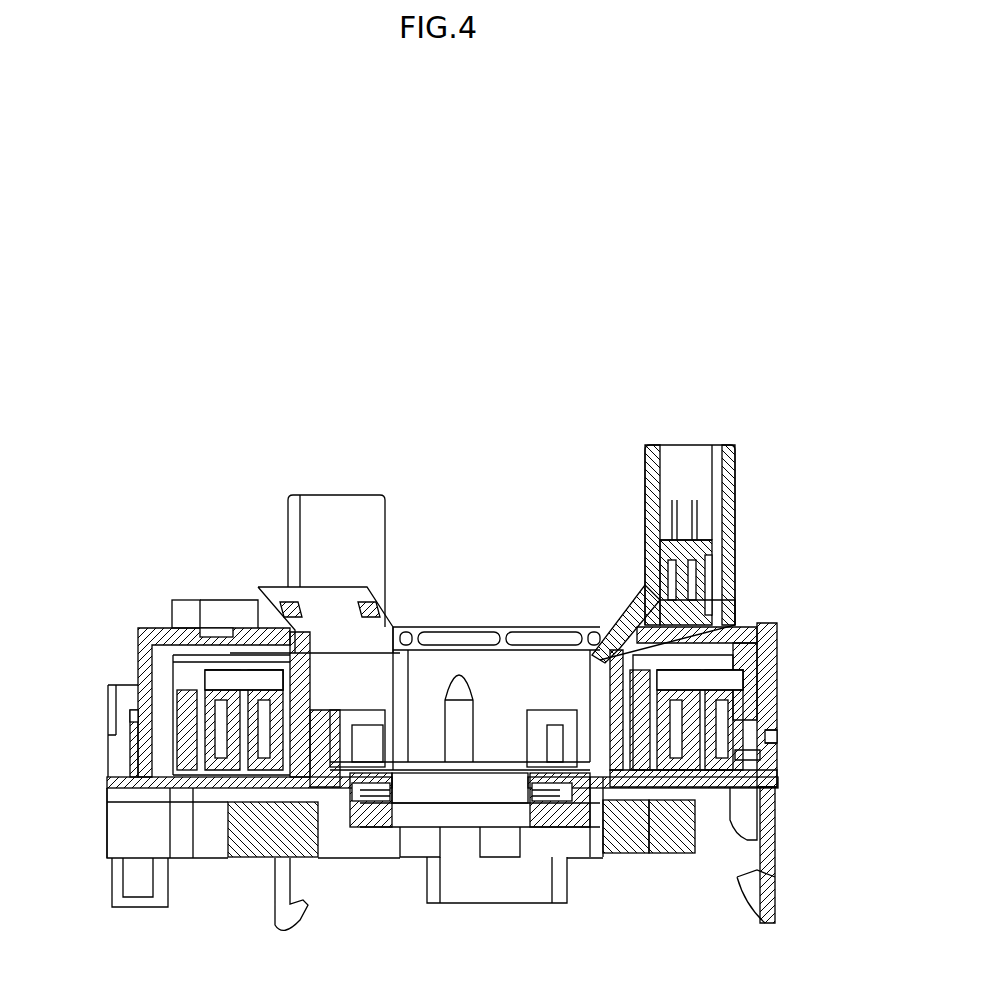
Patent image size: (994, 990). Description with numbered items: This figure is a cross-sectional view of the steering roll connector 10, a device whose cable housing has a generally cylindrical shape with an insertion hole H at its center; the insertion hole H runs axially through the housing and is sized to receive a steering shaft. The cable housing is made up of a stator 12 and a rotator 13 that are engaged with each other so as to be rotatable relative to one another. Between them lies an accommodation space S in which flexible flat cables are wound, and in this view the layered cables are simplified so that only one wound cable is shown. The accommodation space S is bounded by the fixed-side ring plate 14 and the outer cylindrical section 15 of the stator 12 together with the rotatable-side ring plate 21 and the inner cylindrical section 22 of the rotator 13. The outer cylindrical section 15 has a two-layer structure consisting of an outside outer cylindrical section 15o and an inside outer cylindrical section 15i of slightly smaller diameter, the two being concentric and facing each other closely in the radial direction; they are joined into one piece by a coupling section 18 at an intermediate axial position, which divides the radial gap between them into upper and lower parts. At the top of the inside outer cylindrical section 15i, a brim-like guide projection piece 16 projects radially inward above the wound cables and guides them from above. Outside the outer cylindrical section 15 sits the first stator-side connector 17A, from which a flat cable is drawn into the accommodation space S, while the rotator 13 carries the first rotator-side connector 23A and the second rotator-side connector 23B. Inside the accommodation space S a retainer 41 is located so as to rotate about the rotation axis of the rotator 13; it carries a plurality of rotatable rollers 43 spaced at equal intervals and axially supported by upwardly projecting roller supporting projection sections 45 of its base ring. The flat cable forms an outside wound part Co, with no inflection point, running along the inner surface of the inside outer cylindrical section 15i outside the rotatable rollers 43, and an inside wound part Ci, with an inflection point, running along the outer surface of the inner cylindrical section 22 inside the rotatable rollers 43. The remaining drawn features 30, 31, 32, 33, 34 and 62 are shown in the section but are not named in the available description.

The steering roll connector 10 is at (202, 489).
The stator 12 is at (216, 872).
The rotator 13 is at (482, 621).
The fixed-side ring plate 14 is at (193, 860).
The outer cylindrical section 15 is at (78, 718).
The outside outer cylindrical section 15o is at (120, 680).
The inside outer cylindrical section 15i is at (98, 743).
The guide projection piece 16 is at (172, 640).
The first stator-side connector 17A is at (108, 835).
The coupling section 18 is at (150, 660).
The rotatable-side ring plate 21 is at (180, 625).
The inner cylindrical section 22 is at (333, 667).
The first rotator-side connector 23A is at (337, 495).
The second rotator-side connector 23B is at (683, 445).
The locking leg 30 is at (264, 886).
The fixing portion 31 is at (649, 888).
The fixing block 32 is at (660, 857).
The fixing block 33 is at (605, 857).
The support pin 34 is at (583, 858).
The retainer 41 is at (735, 757).
The rotatable rollers 43 is at (136, 628).
The roller supporting projection sections 45 is at (748, 700).
The center holder 62 is at (583, 835).
The insertion hole H is at (520, 695).
The accommodation space S is at (730, 680).
The inside wound part Ci is at (627, 628).
The outside wound part Co is at (750, 712).